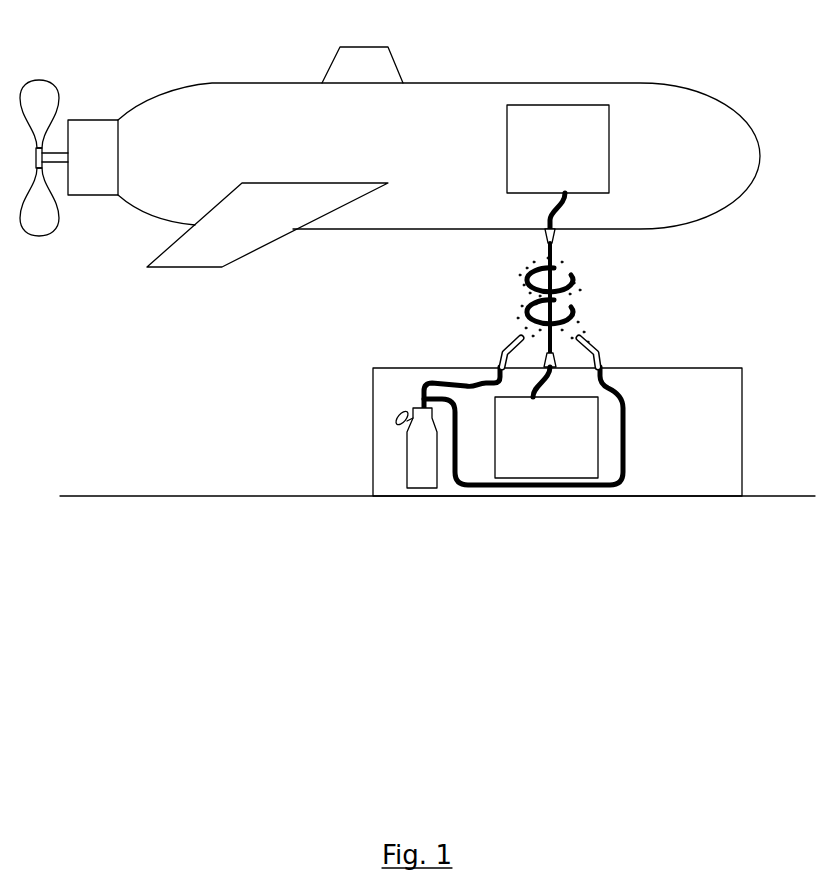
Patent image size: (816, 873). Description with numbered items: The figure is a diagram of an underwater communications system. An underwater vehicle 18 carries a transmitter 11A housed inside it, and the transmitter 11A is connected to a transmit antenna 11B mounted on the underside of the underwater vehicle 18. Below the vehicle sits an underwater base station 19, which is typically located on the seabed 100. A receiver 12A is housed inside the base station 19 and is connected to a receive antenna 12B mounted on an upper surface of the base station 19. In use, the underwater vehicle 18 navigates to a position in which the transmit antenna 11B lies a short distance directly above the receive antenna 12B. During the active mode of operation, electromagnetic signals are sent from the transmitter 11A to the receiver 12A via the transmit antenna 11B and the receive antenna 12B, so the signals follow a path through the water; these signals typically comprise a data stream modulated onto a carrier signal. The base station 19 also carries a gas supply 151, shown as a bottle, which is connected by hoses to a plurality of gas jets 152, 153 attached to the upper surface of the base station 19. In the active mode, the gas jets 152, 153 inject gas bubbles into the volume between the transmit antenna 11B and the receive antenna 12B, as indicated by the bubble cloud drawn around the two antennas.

The underwater vehicle 18 is at (212, 83).
The transmitter 11A is at (558, 174).
The transmit antenna 11B is at (577, 272).
The receiver 12A is at (546, 415).
The receive antenna 12B is at (573, 312).
The underwater base station 19 is at (373, 405).
The seabed 100 is at (263, 497).
The gas supply 151 is at (407, 463).
The gas jet 152 is at (493, 360).
The gas jet 153 is at (603, 360).